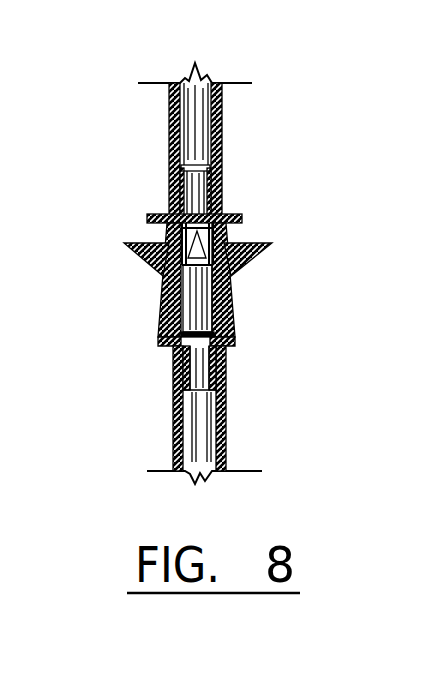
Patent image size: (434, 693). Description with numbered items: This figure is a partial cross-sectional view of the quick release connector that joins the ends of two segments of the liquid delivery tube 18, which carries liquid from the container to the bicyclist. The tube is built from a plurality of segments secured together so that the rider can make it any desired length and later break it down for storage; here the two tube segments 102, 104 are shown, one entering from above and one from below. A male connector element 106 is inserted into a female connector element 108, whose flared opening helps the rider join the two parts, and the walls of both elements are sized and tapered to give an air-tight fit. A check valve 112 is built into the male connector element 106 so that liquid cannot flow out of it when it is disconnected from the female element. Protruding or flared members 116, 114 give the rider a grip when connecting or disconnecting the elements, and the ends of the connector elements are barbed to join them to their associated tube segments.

The liquid delivery tube 18 is at (222, 150).
The liquid delivery tube segment 102 is at (170, 156).
The liquid delivery tube segment 104 is at (227, 428).
The male connector element 106 is at (172, 228).
The female connector element 108 is at (238, 302).
The check valve 112 is at (160, 298).
The flared member 114 is at (124, 248).
The protruding member 116 is at (243, 219).